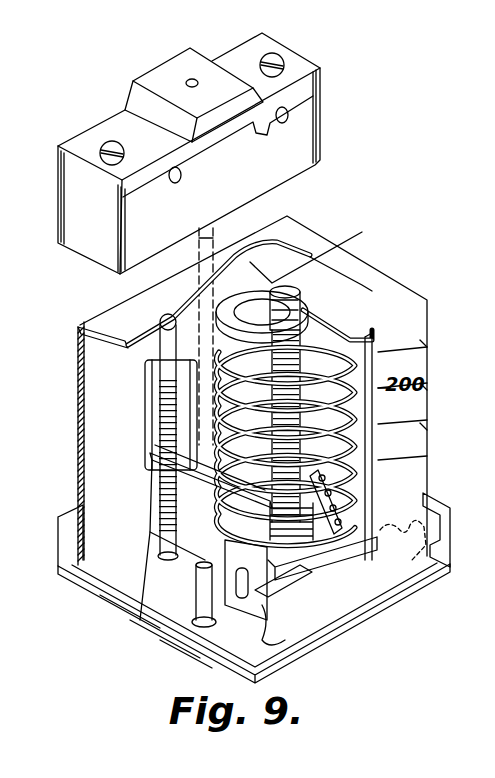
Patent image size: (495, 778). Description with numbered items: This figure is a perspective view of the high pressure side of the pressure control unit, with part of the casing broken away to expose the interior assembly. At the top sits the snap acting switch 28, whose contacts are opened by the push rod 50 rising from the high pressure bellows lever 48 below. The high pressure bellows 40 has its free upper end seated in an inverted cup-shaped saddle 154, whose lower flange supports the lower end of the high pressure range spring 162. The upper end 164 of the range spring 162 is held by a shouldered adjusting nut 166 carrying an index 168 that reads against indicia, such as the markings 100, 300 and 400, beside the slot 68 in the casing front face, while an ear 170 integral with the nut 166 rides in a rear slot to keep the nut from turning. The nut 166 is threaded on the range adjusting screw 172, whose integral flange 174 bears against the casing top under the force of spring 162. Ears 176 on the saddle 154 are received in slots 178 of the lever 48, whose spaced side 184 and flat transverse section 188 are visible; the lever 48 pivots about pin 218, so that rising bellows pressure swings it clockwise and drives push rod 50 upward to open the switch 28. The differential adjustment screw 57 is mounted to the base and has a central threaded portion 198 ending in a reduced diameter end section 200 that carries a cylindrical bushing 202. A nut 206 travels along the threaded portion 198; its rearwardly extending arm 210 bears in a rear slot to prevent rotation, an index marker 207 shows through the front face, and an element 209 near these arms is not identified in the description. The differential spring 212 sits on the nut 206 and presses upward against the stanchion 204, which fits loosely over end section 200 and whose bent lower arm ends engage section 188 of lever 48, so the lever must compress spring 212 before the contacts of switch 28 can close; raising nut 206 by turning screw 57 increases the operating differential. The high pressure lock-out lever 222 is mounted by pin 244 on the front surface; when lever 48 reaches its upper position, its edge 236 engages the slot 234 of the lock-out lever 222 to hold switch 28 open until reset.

The snap acting switch 28 is at (300, 62).
The push rod 50 is at (207, 237).
The ear 170 is at (270, 248).
The high pressure range adjusting screw 172 is at (335, 257).
The flange 174 is at (278, 292).
The shouldered adjusting nut 166 is at (312, 322).
The index 168 is at (375, 300).
The slot 68 is at (373, 342).
The scale mark 100 is at (378, 352).
The scale mark 300 is at (378, 424).
The scale mark 400 is at (378, 460).
The upper end of high pressure range spring 164 is at (427, 349).
The high pressure range spring 162 is at (427, 390).
The bellows saddle 154 is at (427, 430).
The high pressure bellows 40 is at (345, 507).
The pin 218 is at (412, 515).
The slots 178 is at (400, 557).
The ears 176 is at (383, 565).
The side 184 is at (335, 585).
The high pressure lock-out lever 222 is at (305, 603).
The slot 234 is at (272, 652).
The index marker 207 is at (293, 548).
The flat transverse section 188 is at (178, 592).
The differential adjustment screw 57 is at (105, 558).
The pin 244 is at (165, 578).
The high pressure bellows lever 48 is at (168, 614).
The edge 236 is at (200, 645).
The stanchion 204 is at (157, 372).
The rearwardly extending arm 210 is at (143, 420).
The lever arm 209 is at (160, 440).
The nut 206 is at (150, 455).
The central threaded portion 198 is at (150, 500).
The differential spring 212 is at (150, 517).
The end section of reduced diameter 200 is at (150, 305).
The cylindrical bushing 202 is at (88, 326).